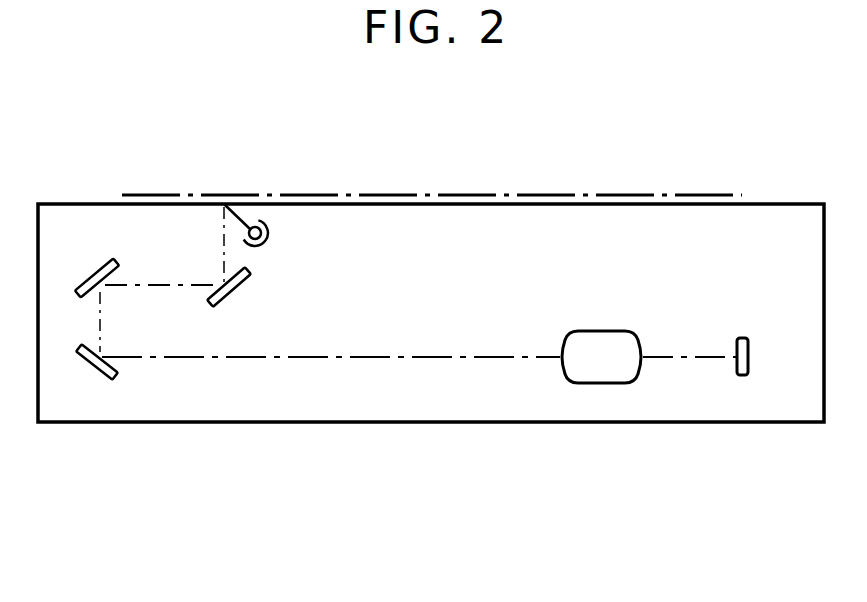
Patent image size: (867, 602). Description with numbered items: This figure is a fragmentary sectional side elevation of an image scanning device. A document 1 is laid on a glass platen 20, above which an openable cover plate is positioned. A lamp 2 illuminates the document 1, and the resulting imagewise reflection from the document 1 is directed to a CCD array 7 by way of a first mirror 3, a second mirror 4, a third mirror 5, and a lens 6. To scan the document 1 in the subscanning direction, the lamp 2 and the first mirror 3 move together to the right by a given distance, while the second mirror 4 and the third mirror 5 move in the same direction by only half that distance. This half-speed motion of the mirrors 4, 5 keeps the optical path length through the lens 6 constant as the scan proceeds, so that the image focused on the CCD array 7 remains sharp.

The document 1 is at (470, 195).
The lamp 2 is at (262, 220).
The first mirror 3 is at (240, 303).
The second mirror 4 is at (94, 268).
The third mirror 5 is at (90, 376).
The lens 6 is at (600, 383).
The CCD array 7 is at (742, 375).
The glass platen 20 is at (537, 204).